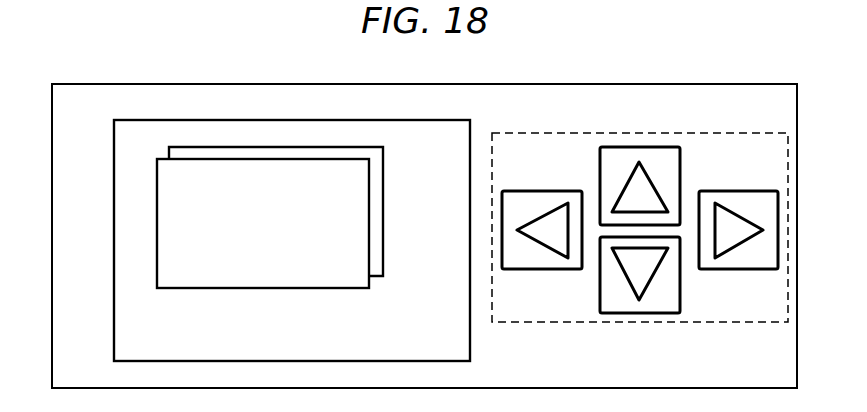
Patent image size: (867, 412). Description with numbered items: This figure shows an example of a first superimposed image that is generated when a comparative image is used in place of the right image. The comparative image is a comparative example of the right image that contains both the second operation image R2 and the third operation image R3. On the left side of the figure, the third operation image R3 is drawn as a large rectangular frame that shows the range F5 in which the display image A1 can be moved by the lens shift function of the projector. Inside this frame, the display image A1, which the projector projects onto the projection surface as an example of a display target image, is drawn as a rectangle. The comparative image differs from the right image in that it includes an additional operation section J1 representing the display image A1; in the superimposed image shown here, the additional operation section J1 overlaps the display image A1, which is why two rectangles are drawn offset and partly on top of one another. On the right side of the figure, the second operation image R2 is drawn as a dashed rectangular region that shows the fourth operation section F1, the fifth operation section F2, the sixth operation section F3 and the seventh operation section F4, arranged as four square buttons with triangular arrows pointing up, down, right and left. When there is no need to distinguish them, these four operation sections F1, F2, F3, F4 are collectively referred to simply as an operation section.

The third operation image R3 is at (311, 120).
The second operation image R2 is at (512, 133).
The additional operation section J1 is at (383, 200).
The display image A1 is at (369, 255).
The fourth operation section F1 is at (643, 147).
The fifth operation section F2 is at (640, 313).
The sixth operation section F3 is at (745, 191).
The seventh operation section F4 is at (542, 191).
The range F5 is at (435, 322).